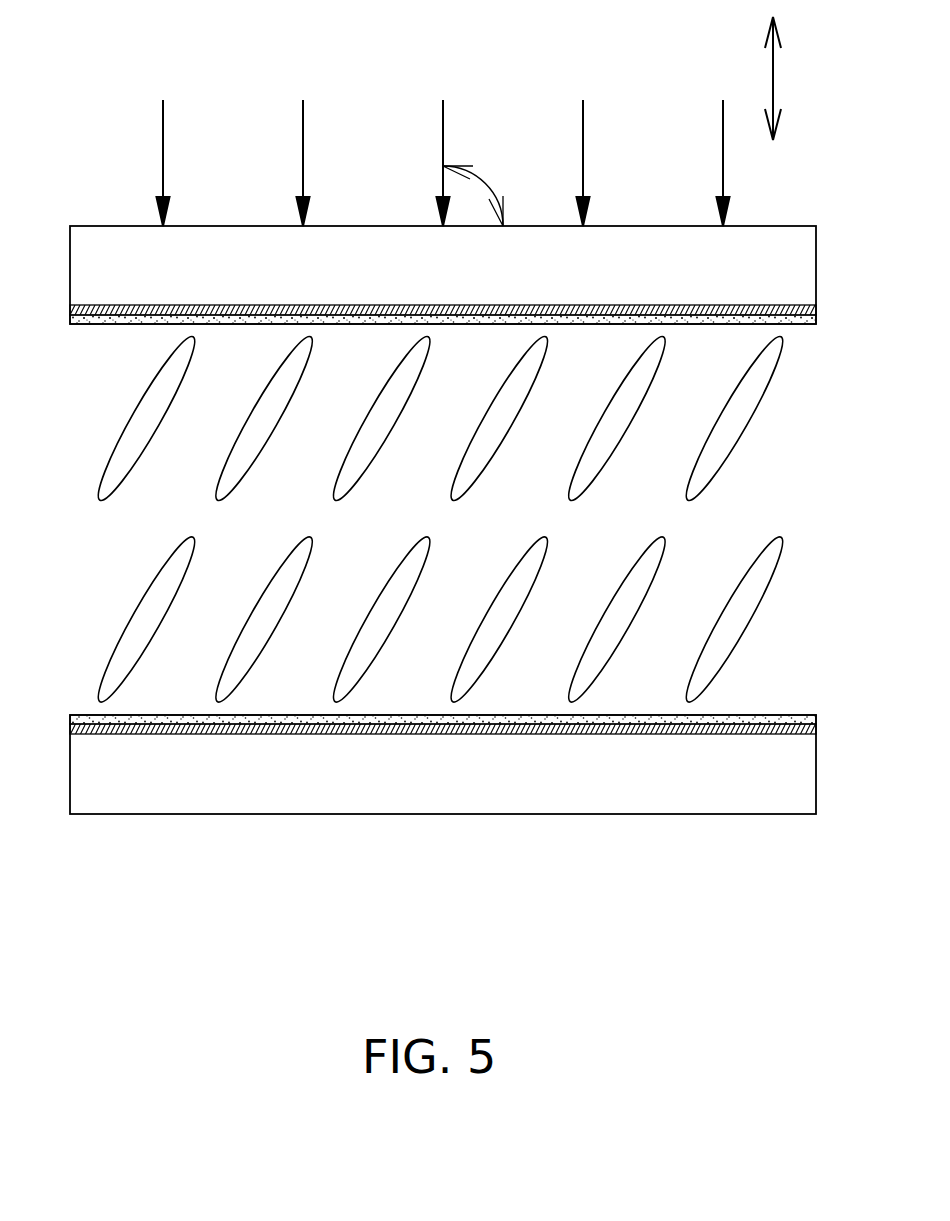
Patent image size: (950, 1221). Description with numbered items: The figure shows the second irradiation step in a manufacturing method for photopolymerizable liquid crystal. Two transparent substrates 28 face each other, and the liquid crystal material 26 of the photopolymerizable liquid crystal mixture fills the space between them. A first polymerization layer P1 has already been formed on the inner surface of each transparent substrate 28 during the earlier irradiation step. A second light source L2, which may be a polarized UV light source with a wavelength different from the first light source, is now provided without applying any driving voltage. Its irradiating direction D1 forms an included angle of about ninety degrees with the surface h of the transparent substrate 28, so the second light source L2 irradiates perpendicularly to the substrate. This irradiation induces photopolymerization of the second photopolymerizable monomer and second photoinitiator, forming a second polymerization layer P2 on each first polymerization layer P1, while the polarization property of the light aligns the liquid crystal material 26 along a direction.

The transparent substrate 28 is at (484, 283).
The first polymerization layer P1 is at (800, 307).
The second polymerization layer P2 is at (800, 318).
The surface of the transparent substrate h is at (799, 225).
The liquid crystal material 26 is at (148, 407).
The second light source L2 is at (443, 151).
The irradiating direction D1 is at (799, 78).